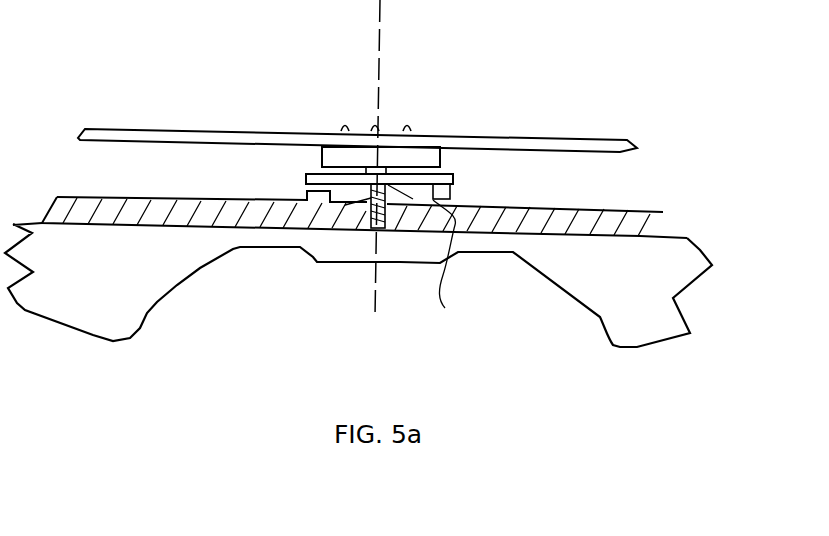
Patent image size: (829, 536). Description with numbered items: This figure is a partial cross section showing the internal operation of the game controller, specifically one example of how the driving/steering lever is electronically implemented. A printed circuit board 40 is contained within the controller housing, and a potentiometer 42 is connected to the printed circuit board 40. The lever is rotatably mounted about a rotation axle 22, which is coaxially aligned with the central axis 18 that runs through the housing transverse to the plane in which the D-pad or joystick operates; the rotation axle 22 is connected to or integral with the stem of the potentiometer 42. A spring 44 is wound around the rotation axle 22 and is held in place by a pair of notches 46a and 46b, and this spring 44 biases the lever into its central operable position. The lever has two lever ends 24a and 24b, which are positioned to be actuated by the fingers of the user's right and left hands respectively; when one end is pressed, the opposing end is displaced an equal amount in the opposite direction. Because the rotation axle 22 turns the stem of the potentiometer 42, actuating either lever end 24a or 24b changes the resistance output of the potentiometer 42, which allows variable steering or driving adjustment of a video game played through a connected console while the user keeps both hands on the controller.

The central axis 18 is at (383, 32).
The rotation axle 22 is at (377, 223).
The lever end 24a is at (123, 293).
The lever end 24b is at (630, 332).
The printed circuit board 40 is at (570, 142).
The potentiometer 42 is at (417, 152).
The spring 44 is at (452, 267).
The notch 46a is at (453, 188).
The notch 46b is at (307, 196).